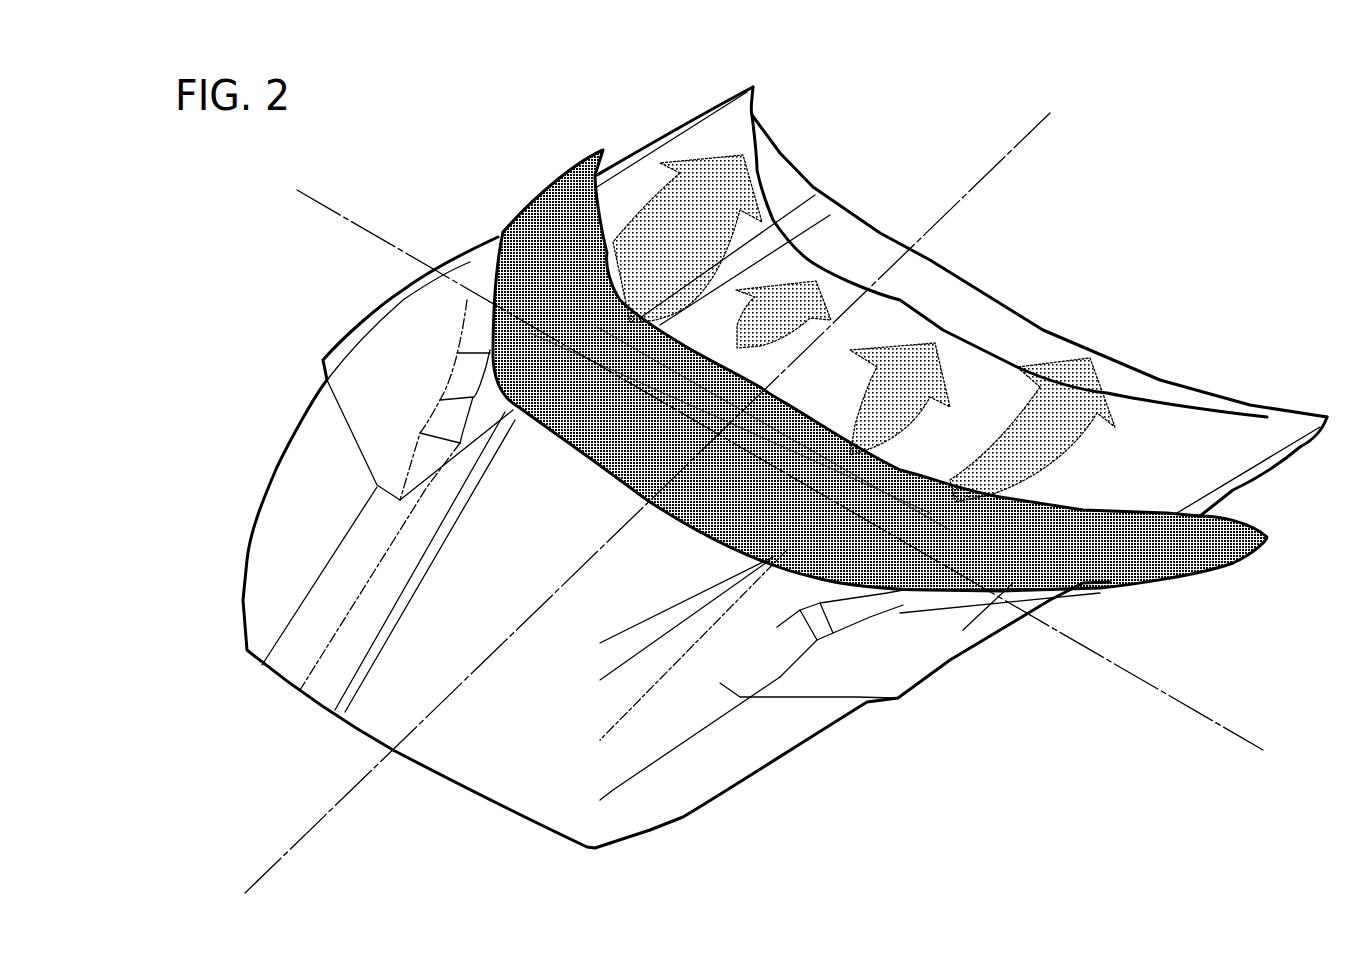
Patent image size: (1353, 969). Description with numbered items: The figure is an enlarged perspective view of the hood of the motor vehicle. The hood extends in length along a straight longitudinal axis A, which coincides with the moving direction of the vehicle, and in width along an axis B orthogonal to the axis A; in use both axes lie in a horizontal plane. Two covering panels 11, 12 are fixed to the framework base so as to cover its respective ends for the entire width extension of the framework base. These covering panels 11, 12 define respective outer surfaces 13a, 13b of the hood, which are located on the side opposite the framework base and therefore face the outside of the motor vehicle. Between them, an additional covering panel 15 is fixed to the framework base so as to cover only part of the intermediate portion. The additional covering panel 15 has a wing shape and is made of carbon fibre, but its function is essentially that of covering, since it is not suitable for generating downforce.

The covering panel 11 is at (697, 722).
The covering panel 12 is at (647, 153).
The outer surface 13a is at (455, 594).
The outer surface 13b is at (848, 293).
The additional covering panel 15 is at (543, 207).
The longitudinal axis A is at (990, 180).
The axis B is at (1213, 714).